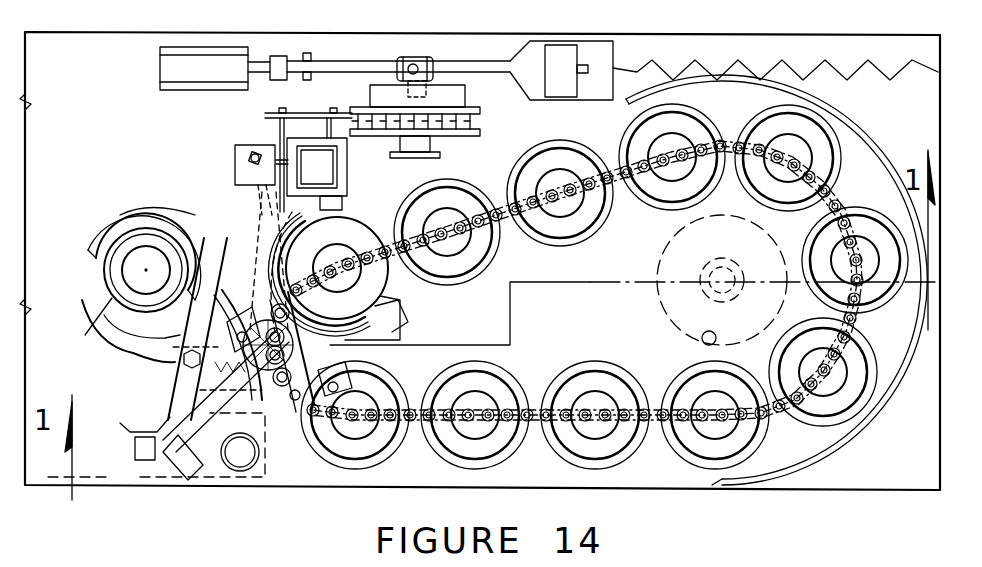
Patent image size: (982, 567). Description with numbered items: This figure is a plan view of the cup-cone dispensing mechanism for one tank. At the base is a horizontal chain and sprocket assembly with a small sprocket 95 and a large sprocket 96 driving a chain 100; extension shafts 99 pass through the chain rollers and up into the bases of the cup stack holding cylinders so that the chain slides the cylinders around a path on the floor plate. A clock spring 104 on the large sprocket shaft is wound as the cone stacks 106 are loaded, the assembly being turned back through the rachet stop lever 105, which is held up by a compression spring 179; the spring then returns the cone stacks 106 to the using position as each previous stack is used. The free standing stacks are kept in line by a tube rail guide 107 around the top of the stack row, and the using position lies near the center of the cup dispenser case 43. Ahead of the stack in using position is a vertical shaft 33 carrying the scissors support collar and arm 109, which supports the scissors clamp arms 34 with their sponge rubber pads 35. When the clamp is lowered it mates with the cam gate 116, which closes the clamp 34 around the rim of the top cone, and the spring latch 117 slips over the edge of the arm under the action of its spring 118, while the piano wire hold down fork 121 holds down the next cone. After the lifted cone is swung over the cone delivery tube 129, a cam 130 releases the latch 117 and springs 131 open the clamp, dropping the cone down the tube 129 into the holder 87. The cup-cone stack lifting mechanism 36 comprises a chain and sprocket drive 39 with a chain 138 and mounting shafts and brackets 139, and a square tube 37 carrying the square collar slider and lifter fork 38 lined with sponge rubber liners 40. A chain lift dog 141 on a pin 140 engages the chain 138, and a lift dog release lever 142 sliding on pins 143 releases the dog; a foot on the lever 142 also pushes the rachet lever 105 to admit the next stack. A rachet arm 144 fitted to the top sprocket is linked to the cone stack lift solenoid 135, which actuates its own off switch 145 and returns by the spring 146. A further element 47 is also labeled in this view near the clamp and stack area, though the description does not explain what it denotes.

The vertical shaft 33 is at (276, 472).
The scissors clamp arms 34 is at (166, 352).
The sponge rubber pads 35 is at (118, 216).
The cup-cone stack lifting mechanism 36 is at (386, 48).
The square tube 37 is at (340, 167).
The square collar slider and lifter fork 38 is at (305, 136).
The chain and sprocket drive 39 is at (500, 128).
The sponge rubber liners 40 is at (328, 274).
The cup dispenser case 43 is at (256, 482).
The guide 47 is at (280, 228).
The holder 87 is at (106, 312).
The small sprocket 95 is at (446, 318).
The large sprocket 96 is at (600, 346).
The extension shafts 99 is at (480, 254).
The chain 100 is at (576, 372).
The clock spring 104 is at (662, 290).
The rachet stop lever 105 is at (260, 226).
The cone stacks 106 is at (462, 472).
The tube rail guide 107 is at (842, 448).
The scissors support collar and arm 109 is at (196, 470).
The cam gate 116 is at (356, 362).
The spring latch 117 is at (184, 400).
The spring 118 is at (184, 410).
The piano wire hold down fork 121 is at (400, 310).
The cone delivery tube 129 is at (135, 214).
The cam 130 is at (128, 432).
The springs 131 is at (100, 488).
The cone stack lift solenoid 135 is at (200, 47).
The chain 138 is at (458, 143).
The mounting shafts and brackets 139 is at (401, 143).
The pin 140 is at (327, 113).
The chain lift dog 141 is at (272, 113).
The lift dog release lever 142 is at (278, 141).
The pins 143 is at (246, 156).
The rachet arm 144 is at (412, 58).
The off switch 145 is at (588, 45).
The spring 146 is at (752, 58).
The compression spring 179 is at (256, 162).